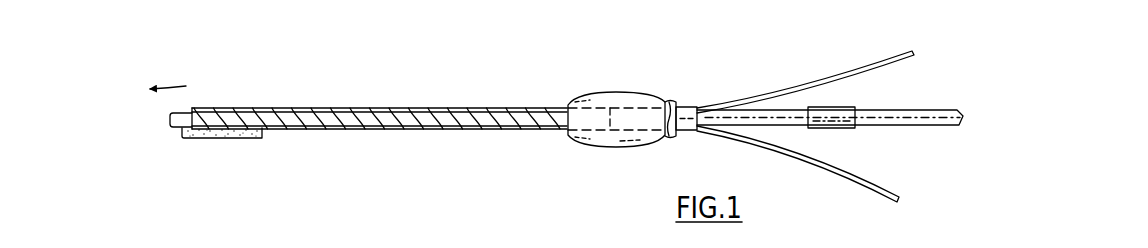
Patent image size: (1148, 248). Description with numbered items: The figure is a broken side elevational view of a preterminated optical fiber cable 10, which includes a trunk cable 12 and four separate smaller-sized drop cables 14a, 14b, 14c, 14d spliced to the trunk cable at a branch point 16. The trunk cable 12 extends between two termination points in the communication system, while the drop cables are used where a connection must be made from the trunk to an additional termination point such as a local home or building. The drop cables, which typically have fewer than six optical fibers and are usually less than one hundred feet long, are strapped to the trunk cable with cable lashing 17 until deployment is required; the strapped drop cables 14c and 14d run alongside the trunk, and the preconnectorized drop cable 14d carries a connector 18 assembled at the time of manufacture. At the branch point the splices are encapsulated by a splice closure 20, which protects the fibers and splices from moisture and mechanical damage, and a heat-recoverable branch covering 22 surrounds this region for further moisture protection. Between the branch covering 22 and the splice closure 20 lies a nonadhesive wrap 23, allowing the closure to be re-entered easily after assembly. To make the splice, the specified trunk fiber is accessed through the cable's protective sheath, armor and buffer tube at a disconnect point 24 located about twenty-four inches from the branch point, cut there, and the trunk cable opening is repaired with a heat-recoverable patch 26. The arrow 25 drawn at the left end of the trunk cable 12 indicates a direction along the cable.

The preterminated optical fiber cable 10 is at (360, 67).
The trunk cable 12 is at (292, 113).
The drop cable 14a is at (853, 77).
The drop cable 14b is at (857, 181).
The drop cable 14c is at (488, 107).
The preconnectorized drop cable 14d is at (448, 130).
The branch point 16 is at (634, 71).
The cable lashing 17 is at (347, 129).
The connector 18 is at (230, 140).
The splice closure 20 is at (687, 107).
The branch covering 22 is at (607, 148).
The nonadhesive wrap 23 is at (685, 137).
The disconnect point 24 is at (845, 107).
The distal direction arrow 25 is at (181, 86).
The patch 26 is at (826, 123).